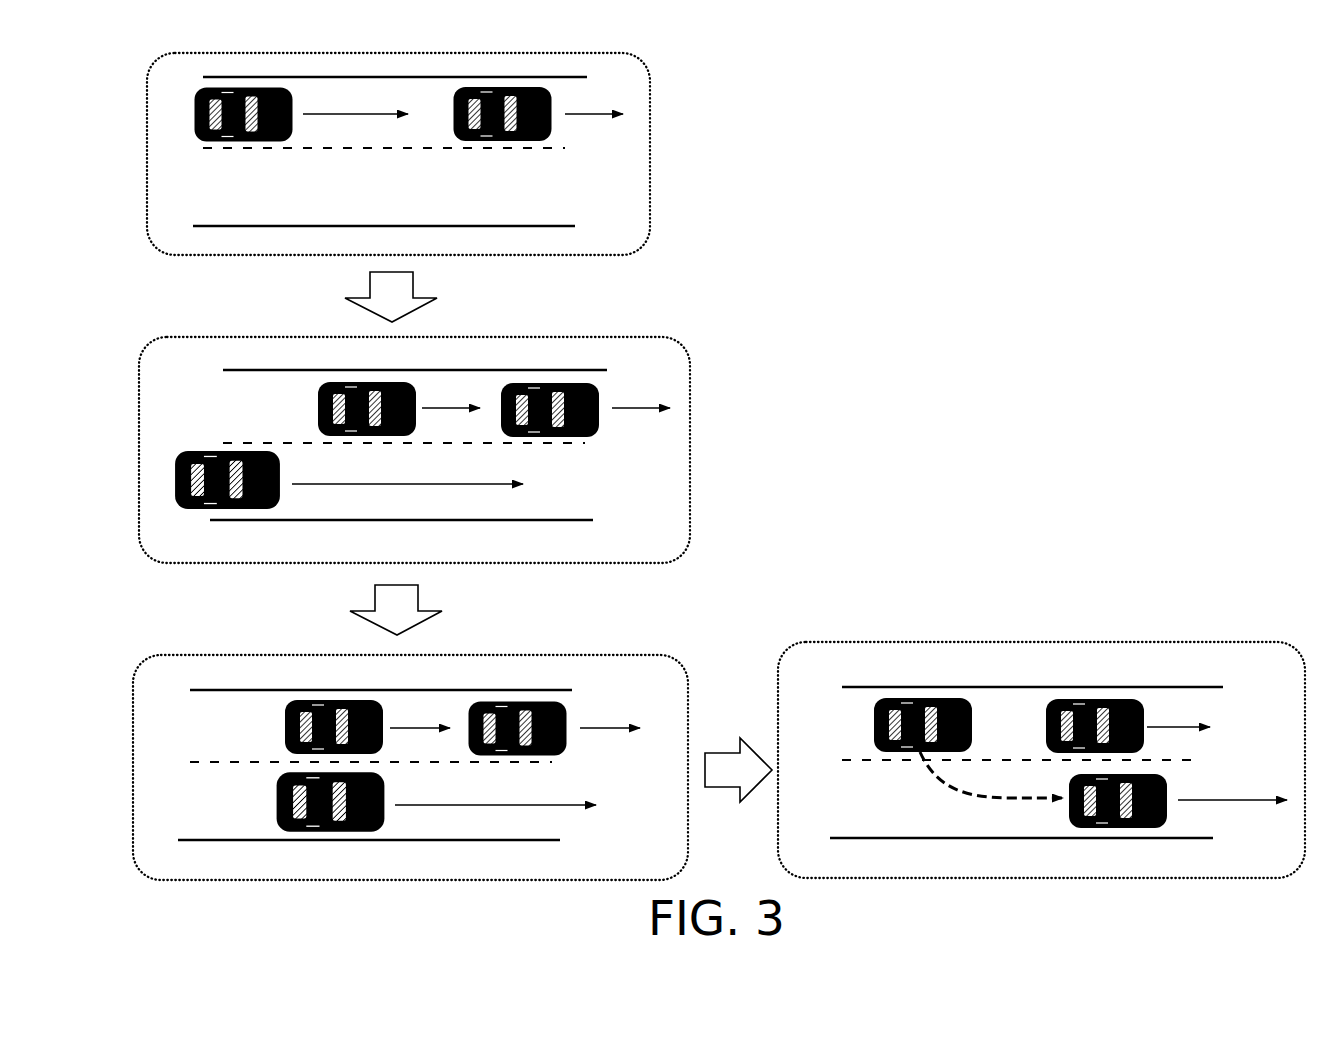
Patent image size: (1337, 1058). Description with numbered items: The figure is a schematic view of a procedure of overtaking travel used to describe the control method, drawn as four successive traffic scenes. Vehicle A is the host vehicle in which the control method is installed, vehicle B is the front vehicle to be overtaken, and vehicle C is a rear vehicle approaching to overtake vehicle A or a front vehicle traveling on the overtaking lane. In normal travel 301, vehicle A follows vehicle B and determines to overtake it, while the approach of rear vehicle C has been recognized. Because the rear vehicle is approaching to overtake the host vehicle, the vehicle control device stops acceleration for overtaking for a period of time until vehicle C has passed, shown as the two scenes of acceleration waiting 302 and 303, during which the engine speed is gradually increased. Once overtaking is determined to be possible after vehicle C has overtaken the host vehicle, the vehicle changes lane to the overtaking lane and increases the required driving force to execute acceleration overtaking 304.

The normal travel 301 is at (549, 53).
The acceleration waiting 302 is at (587, 341).
The acceleration waiting 303 is at (586, 658).
The acceleration overtaking 304 is at (1209, 642).